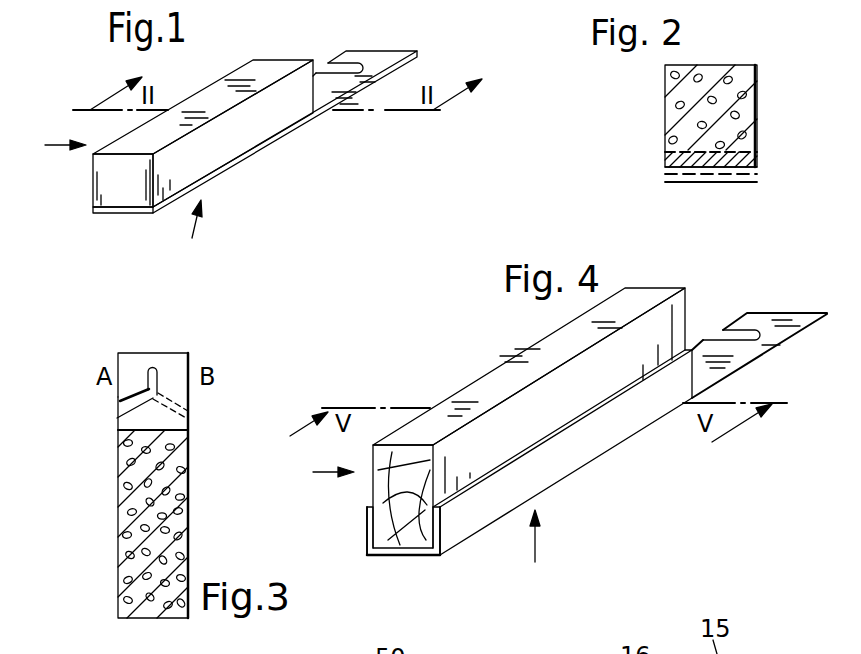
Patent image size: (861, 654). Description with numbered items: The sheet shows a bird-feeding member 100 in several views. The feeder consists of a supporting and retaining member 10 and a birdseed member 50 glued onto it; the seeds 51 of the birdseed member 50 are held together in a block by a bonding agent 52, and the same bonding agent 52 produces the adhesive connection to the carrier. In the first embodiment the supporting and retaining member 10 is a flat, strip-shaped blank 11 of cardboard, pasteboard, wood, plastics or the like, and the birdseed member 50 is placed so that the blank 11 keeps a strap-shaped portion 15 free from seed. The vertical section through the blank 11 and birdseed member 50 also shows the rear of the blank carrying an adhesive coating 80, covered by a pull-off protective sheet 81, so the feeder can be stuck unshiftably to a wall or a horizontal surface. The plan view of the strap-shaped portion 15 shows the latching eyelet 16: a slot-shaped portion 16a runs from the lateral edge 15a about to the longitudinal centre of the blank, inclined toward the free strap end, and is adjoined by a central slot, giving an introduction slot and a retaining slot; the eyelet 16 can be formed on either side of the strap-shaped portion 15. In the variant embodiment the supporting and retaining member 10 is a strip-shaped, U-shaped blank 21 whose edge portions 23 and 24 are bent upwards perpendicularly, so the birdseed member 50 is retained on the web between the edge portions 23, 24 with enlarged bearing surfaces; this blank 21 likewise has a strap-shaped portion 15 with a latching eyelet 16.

In FIG. 1, the supporting and retaining member 10 is at (210, 226).
In FIG. 4, the supporting and retaining member 10 is at (540, 550).
In FIG. 1, the strip-shaped blank 11 is at (292, 128).
In FIG. 2, the strip-shaped blank 11 is at (665, 163).
In FIG. 1, the strap-shaped portion 15 is at (387, 53).
In FIG. 3, the strap-shaped portion 15 is at (177, 370).
In FIG. 4, the strap-shaped portion 15 is at (762, 347).
In FIG. 3, the lateral edge 15a is at (117, 430).
In FIG. 1, the latching eyelet 16 is at (357, 63).
In FIG. 3, the latching eyelet 16 is at (152, 367).
In FIG. 4, the latching eyelet 16 is at (757, 326).
In FIG. 3, the slot-shaped portion 16a is at (117, 418).
In FIG. 4, the U-shaped blank 21 is at (567, 467).
In FIG. 4, the edge portion 23 is at (437, 528).
In FIG. 4, the edge portion 24 is at (368, 555).
In FIG. 1, the birdseed member 50 is at (244, 76).
In FIG. 2, the birdseed member 50 is at (665, 112).
In FIG. 3, the birdseed member 50 is at (180, 570).
In FIG. 4, the birdseed member 50 is at (500, 373).
In FIG. 2, the seeds 51 is at (700, 72).
In FIG. 2, the bonding agent 52 is at (698, 153).
In FIG. 2, the adhesive coating 80 is at (729, 176).
In FIG. 2, the pull-off protective sheet 81 is at (683, 182).
In FIG. 1, the bird-feeding member 100 is at (68, 159).